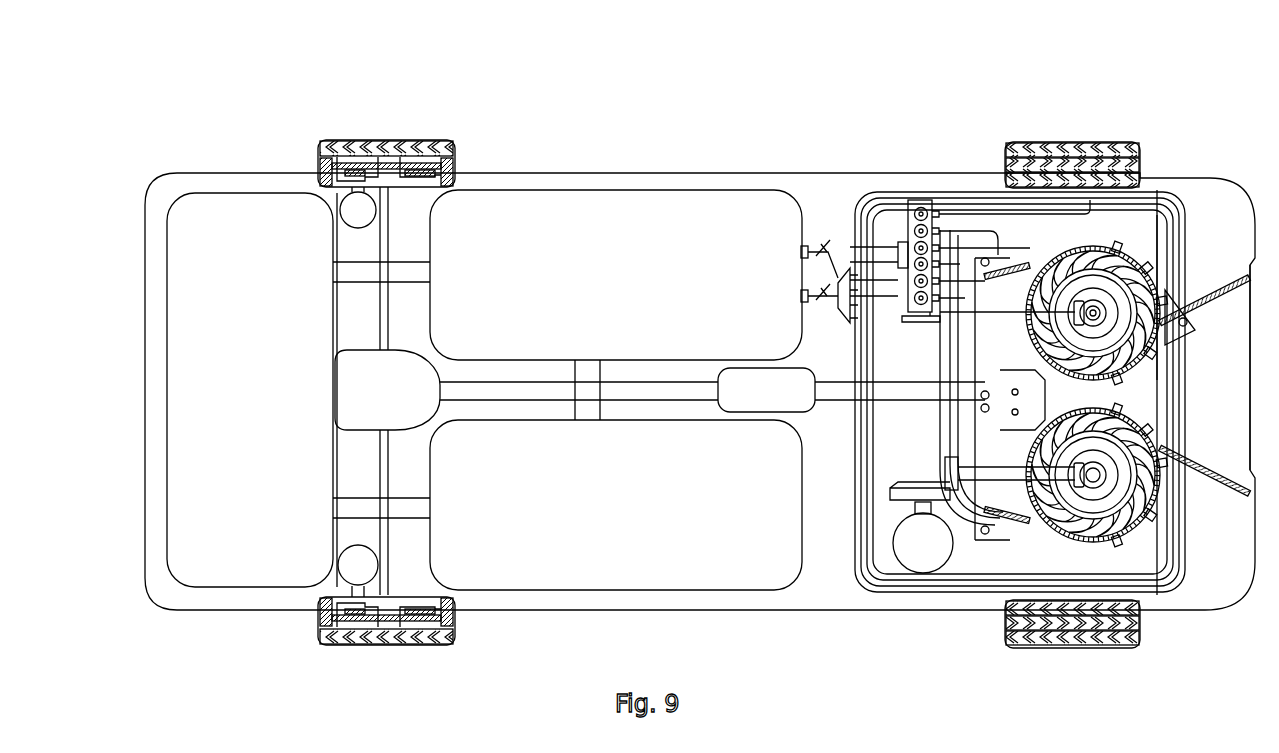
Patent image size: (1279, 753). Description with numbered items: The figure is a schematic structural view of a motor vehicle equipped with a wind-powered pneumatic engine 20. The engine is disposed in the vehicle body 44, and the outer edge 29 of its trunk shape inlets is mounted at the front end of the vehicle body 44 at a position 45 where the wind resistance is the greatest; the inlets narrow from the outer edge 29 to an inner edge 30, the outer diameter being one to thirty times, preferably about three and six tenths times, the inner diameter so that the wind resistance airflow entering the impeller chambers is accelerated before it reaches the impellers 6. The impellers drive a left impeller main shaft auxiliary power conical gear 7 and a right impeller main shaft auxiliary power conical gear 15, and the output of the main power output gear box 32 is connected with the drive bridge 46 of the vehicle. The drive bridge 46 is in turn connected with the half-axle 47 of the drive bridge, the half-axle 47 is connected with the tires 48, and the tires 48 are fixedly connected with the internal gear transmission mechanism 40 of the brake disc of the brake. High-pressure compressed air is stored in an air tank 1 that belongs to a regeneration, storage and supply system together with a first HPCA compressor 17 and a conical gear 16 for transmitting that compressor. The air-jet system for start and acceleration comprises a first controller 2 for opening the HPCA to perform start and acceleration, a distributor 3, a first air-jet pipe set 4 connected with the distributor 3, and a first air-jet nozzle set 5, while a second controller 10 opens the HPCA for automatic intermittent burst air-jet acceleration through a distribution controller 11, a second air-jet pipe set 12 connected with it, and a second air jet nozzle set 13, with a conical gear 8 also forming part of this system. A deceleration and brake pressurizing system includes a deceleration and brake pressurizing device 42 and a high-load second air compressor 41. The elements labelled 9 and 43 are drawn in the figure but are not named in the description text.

The air tank 1 is at (582, 555).
The first controller 2 is at (838, 298).
The distributor 3 is at (835, 280).
The first air-jet pipe set 4 is at (862, 262).
The first air-jet nozzle set 5 is at (1165, 522).
The impellers 6 is at (1147, 300).
The left impeller main shaft auxiliary power conical gear 7 is at (1075, 300).
The conical gear 8 is at (935, 312).
The valve bank 9 is at (915, 233).
The second controller 10 is at (822, 245).
The distribution controller 11 is at (930, 245).
The second air-jet pipe set 12 is at (960, 330).
The second air jet nozzle set 13 is at (1062, 548).
The right impeller main shaft auxiliary power conical gear 15 is at (1082, 320).
The conical gear 16 is at (955, 490).
The first HPCA compressor 17 is at (925, 553).
The wind-powered pneumatic engine 20 is at (1032, 262).
The outer edge 29 is at (1247, 350).
The inner edge 30 is at (1157, 380).
The main power output gear box 32 is at (1012, 268).
The internal gear transmission mechanism of the brake disc 40 is at (407, 612).
The high-load second air compressor 41 is at (386, 227).
The deceleration and brake pressurizing device 42 is at (345, 617).
The bearing 43 is at (355, 208).
The vehicle body 44 is at (998, 575).
The position 45 is at (1262, 470).
The drive bridge 46 is at (378, 368).
The half-axle 47 is at (410, 172).
The tires 48 is at (430, 625).